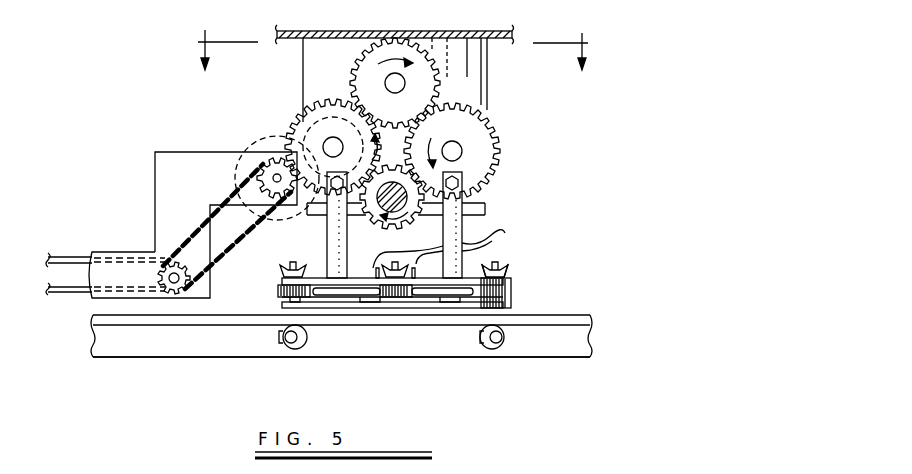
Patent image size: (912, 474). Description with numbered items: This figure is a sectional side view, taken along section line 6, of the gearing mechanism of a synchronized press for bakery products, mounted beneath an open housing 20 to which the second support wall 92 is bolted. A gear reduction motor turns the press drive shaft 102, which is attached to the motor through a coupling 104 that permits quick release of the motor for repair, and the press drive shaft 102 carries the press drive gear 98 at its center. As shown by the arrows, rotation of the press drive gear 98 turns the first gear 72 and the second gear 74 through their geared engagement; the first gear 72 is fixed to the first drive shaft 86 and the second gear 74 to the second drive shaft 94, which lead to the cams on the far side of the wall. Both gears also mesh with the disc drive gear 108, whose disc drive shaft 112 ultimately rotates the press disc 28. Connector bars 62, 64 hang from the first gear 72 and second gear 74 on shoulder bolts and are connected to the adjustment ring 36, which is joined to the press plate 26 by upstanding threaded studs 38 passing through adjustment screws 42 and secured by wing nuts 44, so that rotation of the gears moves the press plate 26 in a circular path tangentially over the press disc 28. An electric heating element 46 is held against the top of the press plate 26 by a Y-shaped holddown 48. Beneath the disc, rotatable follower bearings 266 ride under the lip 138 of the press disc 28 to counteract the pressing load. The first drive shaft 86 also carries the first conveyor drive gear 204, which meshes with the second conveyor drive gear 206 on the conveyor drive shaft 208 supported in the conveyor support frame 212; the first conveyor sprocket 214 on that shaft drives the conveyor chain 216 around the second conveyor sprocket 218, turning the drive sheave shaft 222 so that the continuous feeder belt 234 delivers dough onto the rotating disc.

The section line 6- 6 is at (393, 62).
The open housing 20 is at (437, 31).
The first conveyor drive gear 204 is at (300, 88).
The second support wall 92 is at (488, 83).
The disc drive gear 108 is at (362, 60).
The disc drive shaft 112 is at (405, 90).
The first gear 72 is at (328, 99).
The first drive shaft 86 is at (328, 141).
The second gear 74 is at (498, 138).
The second drive shaft 94 is at (451, 141).
The coupling 104 is at (485, 204).
The press drive gear 98 is at (405, 226).
The press drive shaft 102 is at (378, 213).
The connector bar 62 is at (327, 232).
The connector bar 64 is at (460, 228).
The threaded stud 38 is at (497, 257).
The adjustment ring 36 is at (506, 282).
The wing nut 44 is at (503, 277).
The Y-shaped holddown 48 is at (357, 296).
The electric heating element 46 is at (382, 301).
The press plate 26 is at (445, 309).
The adjustment screw 42 is at (512, 293).
The press disc 28 is at (571, 315).
The lip 138 is at (590, 326).
The follower bearing 266 is at (296, 350).
The conveyor support frame 212 is at (202, 190).
The second conveyor sprocket 218 is at (182, 246).
The continuous feeder belt 234 is at (67, 258).
The conveyor drive shaft 208 is at (273, 175).
The second conveyor drive gear 206 is at (254, 148).
The conveyor chain 216 is at (193, 233).
The first conveyor sprocket 214 is at (267, 197).
The drive sheave shaft 222 is at (180, 278).